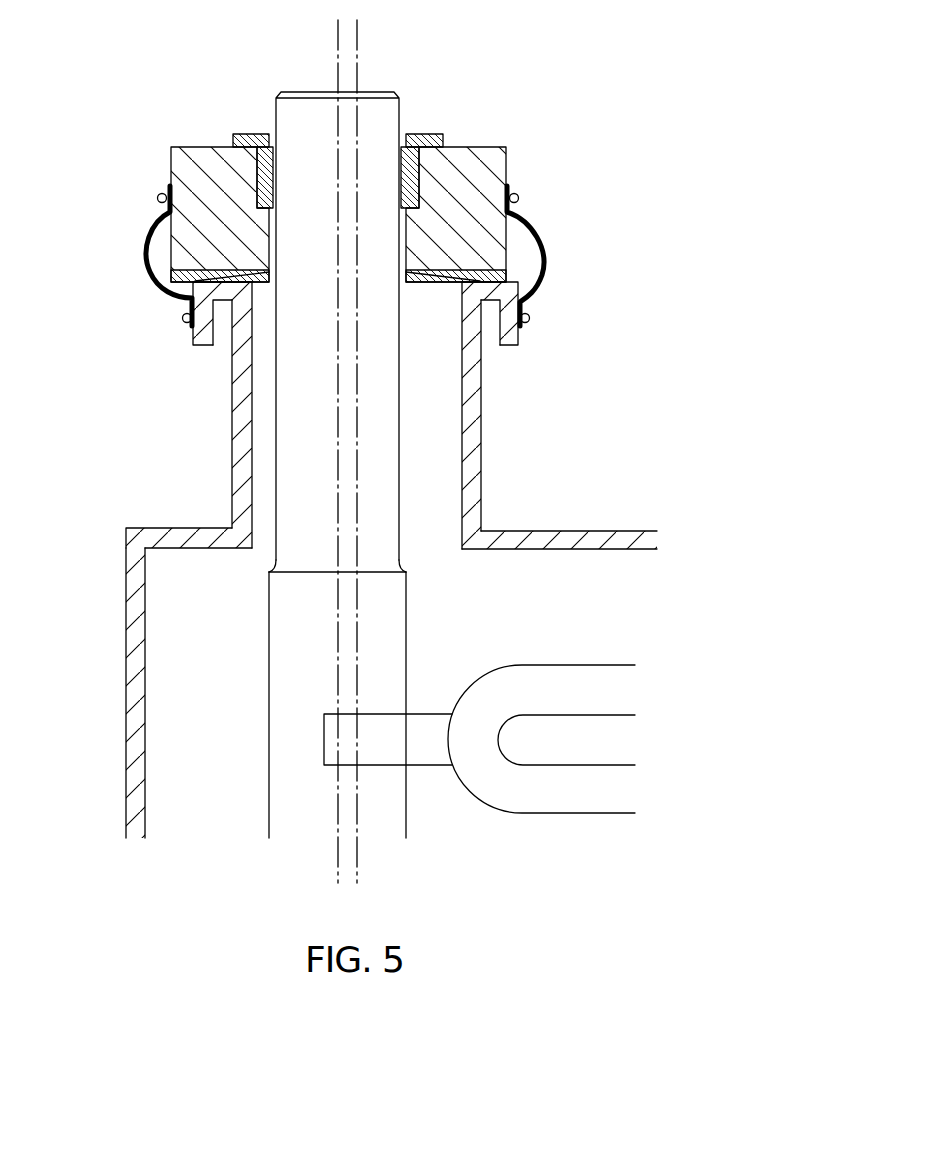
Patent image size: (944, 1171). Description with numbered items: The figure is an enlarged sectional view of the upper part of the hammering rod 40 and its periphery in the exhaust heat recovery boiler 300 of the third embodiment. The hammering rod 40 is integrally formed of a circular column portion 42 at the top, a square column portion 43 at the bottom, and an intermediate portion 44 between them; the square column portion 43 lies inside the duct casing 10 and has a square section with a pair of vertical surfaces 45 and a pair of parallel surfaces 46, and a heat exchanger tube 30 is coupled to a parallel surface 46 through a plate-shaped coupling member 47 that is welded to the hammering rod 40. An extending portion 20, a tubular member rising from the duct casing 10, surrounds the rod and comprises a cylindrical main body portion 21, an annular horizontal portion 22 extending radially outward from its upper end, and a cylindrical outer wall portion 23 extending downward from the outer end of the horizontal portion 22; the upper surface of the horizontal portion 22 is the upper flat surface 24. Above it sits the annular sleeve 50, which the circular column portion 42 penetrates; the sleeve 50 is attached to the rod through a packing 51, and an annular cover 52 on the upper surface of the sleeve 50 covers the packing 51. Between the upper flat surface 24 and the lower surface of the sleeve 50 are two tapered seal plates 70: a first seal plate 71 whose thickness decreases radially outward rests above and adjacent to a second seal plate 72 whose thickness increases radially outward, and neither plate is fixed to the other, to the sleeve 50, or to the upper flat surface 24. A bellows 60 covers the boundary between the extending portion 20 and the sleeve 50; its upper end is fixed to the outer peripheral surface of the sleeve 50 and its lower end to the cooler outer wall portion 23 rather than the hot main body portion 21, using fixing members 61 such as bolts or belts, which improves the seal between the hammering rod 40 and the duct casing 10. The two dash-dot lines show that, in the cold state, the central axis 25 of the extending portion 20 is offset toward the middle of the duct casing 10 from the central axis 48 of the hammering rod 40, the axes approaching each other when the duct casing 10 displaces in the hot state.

The exhaust heat recovery boiler 300 is at (118, 94).
The duct casing 10 is at (126, 605).
The extending portion 20 is at (375, 327).
The main body portion 21 is at (243, 471).
The horizontal portion 22 is at (223, 300).
The outer wall portion 23 is at (193, 347).
The upper flat surface 24 is at (220, 280).
The central axis of the extending portion 25 is at (358, 50).
The heat exchanger tube 30 is at (556, 690).
The hammering rod 40 is at (324, 451).
The circular column portion 42 is at (383, 400).
The square column portion 43 is at (406, 648).
The intermediate portion 44 is at (394, 571).
The vertical surface 45 is at (269, 603).
The parallel surface 46 is at (285, 657).
The coupling member 47 is at (428, 766).
The central axis of the hammering rod 48 is at (338, 57).
The sleeve 50 is at (338, 231).
The packing 51 is at (413, 158).
The cover 52 is at (441, 140).
The bellows 60 is at (314, 257).
The fixing member 61 is at (158, 197).
The seal plate 70 is at (338, 320).
The first seal plate 71 is at (425, 283).
The second seal plate 72 is at (455, 285).